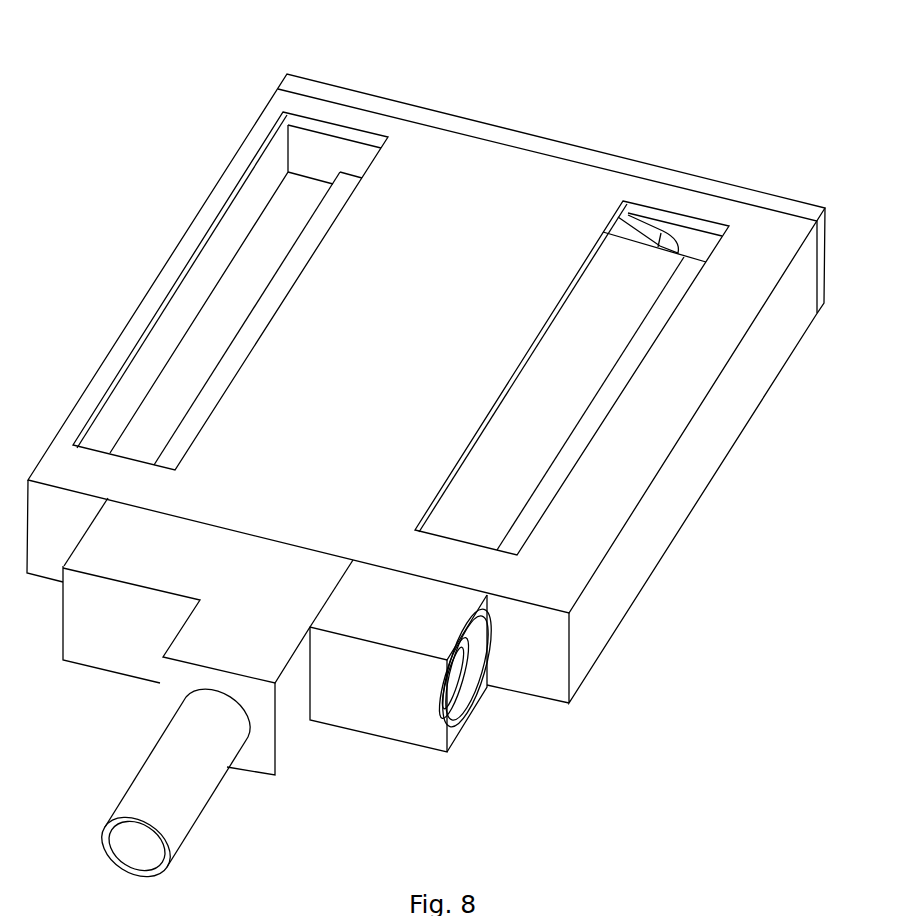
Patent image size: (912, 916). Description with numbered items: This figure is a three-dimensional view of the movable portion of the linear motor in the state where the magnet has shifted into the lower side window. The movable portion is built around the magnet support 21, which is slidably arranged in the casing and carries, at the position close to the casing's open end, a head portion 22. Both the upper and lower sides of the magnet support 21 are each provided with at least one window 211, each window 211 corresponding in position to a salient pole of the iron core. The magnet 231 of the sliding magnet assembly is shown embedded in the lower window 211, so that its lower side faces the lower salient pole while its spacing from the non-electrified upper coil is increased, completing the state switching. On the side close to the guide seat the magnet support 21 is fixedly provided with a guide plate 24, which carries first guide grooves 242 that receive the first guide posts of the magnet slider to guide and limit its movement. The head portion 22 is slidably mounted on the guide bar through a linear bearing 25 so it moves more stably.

The magnet support 21 is at (698, 470).
The window 211 is at (235, 237).
The head portion 22 is at (370, 713).
The magnet 231 is at (553, 482).
The guide plate 24 is at (360, 100).
The first guide groove 242 is at (649, 233).
The linear bearing 25 is at (469, 707).